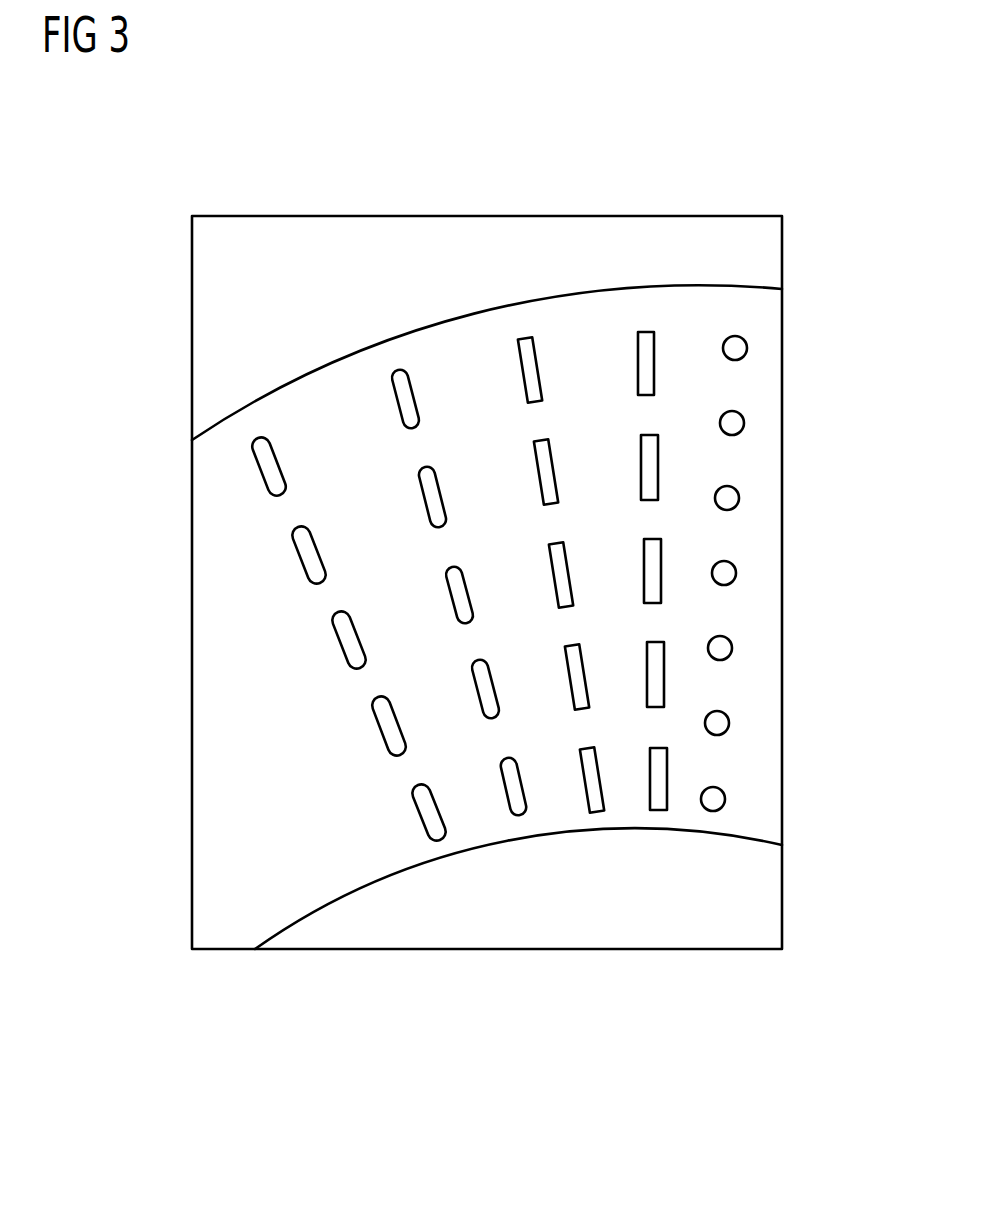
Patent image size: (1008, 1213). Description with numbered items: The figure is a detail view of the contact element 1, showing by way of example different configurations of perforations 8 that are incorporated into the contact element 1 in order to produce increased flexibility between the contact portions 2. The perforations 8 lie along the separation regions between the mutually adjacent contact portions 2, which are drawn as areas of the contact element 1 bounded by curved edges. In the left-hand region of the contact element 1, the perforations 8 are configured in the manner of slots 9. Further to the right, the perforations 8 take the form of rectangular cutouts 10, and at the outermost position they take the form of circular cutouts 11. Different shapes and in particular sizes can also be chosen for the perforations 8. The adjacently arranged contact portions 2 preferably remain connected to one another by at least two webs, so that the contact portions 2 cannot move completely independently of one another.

The contact element 1 is at (475, 247).
The contact portion 2 is at (763, 775).
The perforation 8 is at (250, 438).
The slot 9 is at (428, 815).
The rectangular cutout 10 is at (592, 780).
The circular cutout 11 is at (728, 498).